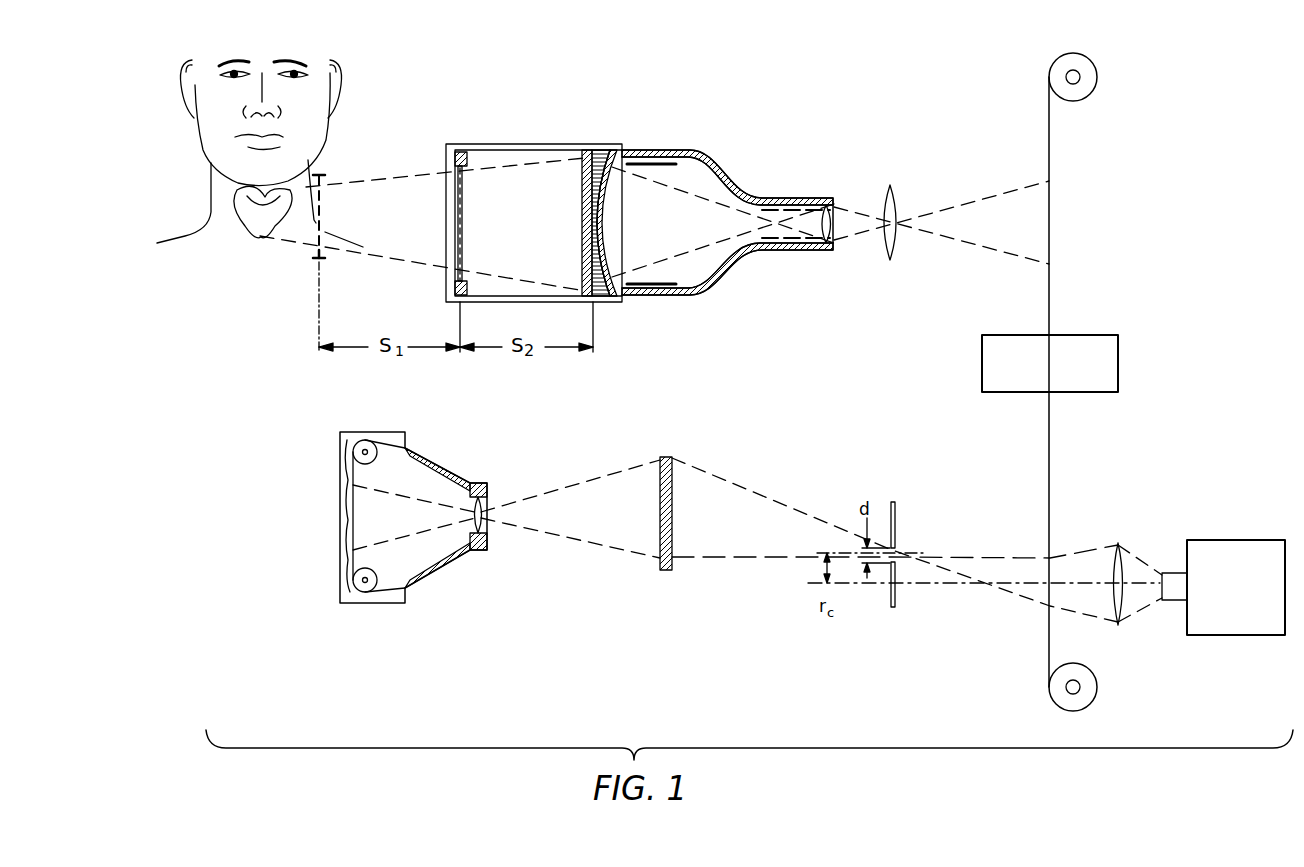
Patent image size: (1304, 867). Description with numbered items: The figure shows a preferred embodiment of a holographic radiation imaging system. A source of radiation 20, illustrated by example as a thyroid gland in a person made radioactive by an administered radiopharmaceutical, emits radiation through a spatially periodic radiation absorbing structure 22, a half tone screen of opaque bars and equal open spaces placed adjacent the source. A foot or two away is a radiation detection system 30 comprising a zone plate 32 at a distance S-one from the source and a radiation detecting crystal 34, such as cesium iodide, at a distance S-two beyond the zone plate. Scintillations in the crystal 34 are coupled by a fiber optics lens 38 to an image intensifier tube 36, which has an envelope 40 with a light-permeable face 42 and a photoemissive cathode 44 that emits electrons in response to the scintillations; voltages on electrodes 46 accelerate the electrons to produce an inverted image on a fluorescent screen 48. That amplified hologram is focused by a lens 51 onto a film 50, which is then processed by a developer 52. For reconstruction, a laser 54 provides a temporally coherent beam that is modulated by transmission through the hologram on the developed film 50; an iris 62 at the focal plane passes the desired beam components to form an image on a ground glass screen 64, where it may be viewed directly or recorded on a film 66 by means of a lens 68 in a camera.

The source of radiation 20 is at (282, 197).
The spatially periodic radiation absorbing structure 22 is at (323, 215).
The radiation detection system 30 is at (554, 138).
The zone plate 32 is at (465, 251).
The radiation detecting crystal 34 is at (588, 211).
The image intensifier tube 36 is at (672, 143).
The fiber optics lens 38 is at (596, 162).
The envelope 40 is at (723, 173).
The face 42 is at (603, 250).
The photoemissive cathode 44 is at (604, 207).
The electrodes 46 is at (650, 288).
The fluorescent screen 48 is at (830, 224).
The film 50 is at (1050, 158).
The lens 51 is at (896, 203).
The developer 52 is at (1075, 336).
The laser 54 is at (1222, 540).
The iris 62 is at (896, 512).
The ground glass screen 64 is at (673, 466).
The film 66 is at (354, 532).
The lens 68 is at (485, 512).